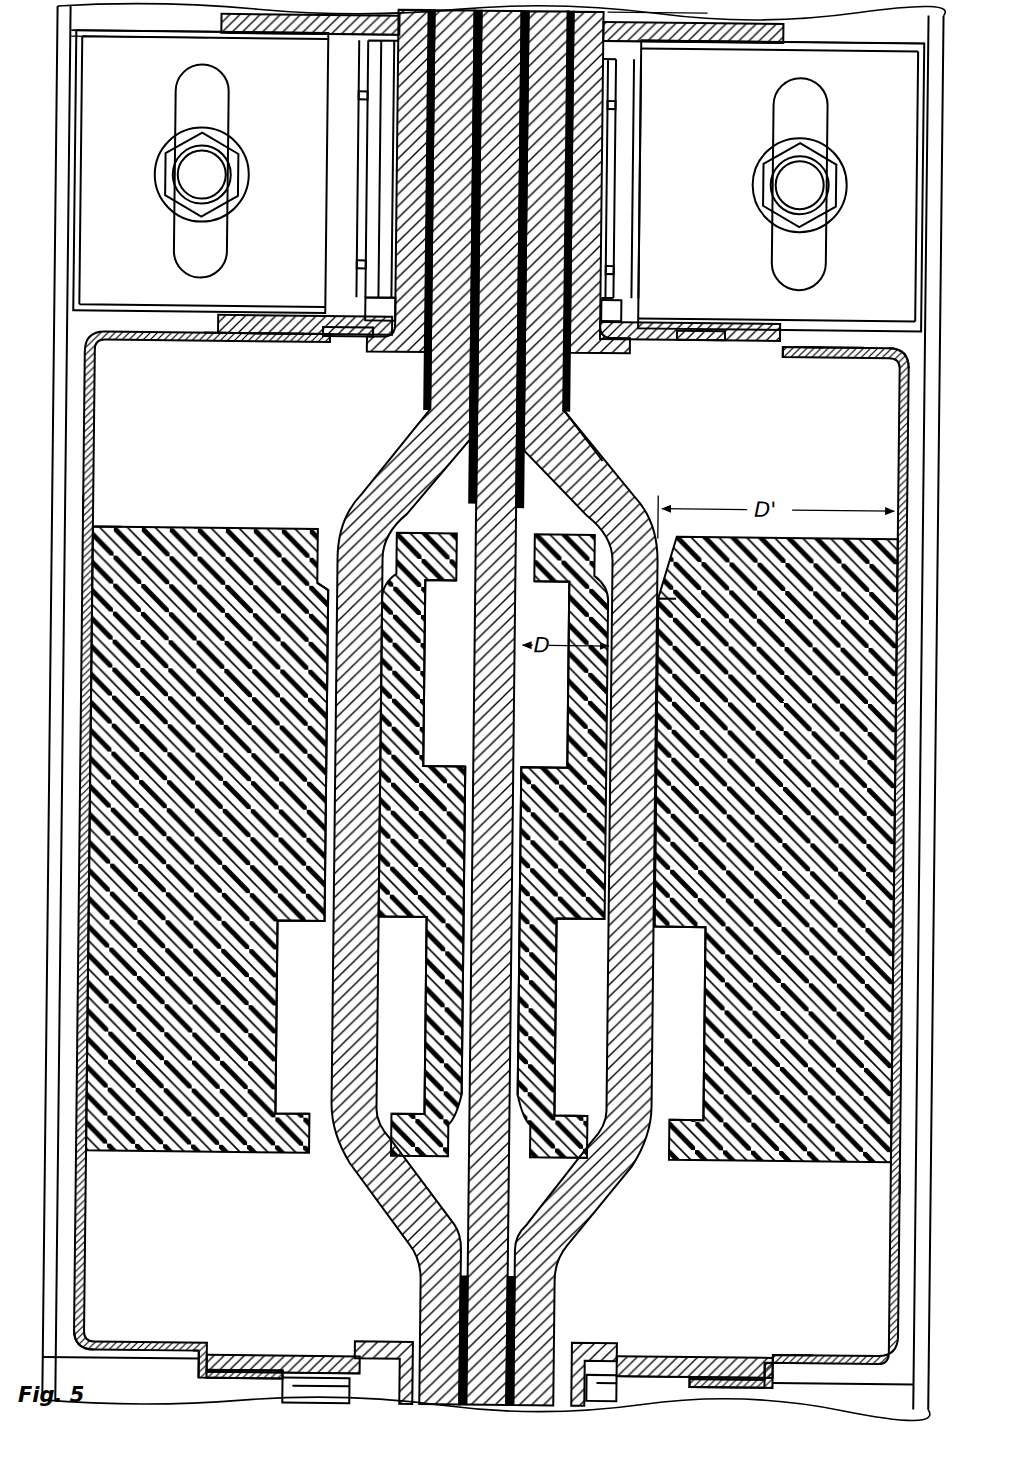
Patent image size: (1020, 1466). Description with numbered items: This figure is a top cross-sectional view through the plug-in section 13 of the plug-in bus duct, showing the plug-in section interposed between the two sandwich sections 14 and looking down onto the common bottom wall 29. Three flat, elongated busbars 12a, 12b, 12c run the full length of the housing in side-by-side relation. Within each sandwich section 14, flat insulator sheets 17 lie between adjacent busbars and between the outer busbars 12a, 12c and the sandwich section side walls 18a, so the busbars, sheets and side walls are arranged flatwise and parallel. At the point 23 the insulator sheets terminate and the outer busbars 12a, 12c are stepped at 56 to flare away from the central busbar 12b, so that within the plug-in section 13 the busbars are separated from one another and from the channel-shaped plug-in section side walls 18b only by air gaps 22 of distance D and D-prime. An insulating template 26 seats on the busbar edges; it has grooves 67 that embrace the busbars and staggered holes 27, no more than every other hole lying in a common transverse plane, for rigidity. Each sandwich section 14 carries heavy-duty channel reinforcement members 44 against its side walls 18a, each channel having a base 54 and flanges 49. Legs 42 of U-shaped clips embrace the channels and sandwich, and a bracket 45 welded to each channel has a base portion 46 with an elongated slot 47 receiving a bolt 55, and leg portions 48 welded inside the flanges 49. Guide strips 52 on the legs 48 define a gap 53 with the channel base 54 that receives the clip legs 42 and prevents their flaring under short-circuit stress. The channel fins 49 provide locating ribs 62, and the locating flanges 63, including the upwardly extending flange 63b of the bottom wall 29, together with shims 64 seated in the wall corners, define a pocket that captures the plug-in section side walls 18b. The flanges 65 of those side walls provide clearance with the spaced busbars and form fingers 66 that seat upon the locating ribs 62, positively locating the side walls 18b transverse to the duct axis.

The busbar 12a is at (432, 422).
The busbar 12b is at (478, 436).
The busbar 12c is at (548, 428).
The plug-in section 13 is at (122, 372).
The sandwich section 14 is at (660, 15).
The insulator sheet 17 is at (466, 372).
The sandwich section side wall 18a is at (417, 180).
The plug-in section side wall 18b is at (90, 462).
The air gap 22 is at (492, 858).
The point 23 is at (578, 446).
The insulator template 26 is at (330, 528).
The hole 27 is at (496, 849).
The bottom wall 29 is at (140, 22).
The leg 42 is at (377, 129).
The reinforcement member 44 is at (786, 33).
The bracket 45 is at (262, 338).
The base portion 46 is at (500, 180).
The elongated slot 47 is at (227, 258).
The leg portion 48 is at (318, 46).
The flange 49 is at (272, 36).
The guide strip 52 is at (352, 97).
The gap 53 is at (620, 312).
The base 54 is at (392, 210).
The bolt 55 is at (222, 178).
The step 56 is at (501, 708).
The locating rib 62 is at (286, 340).
The locating flange 63 is at (68, 421).
The upwardly extending flange 63b is at (55, 1262).
The shim 64 is at (90, 510).
The flange 65 is at (210, 340).
The finger 66 is at (250, 335).
The groove 67 is at (597, 744).